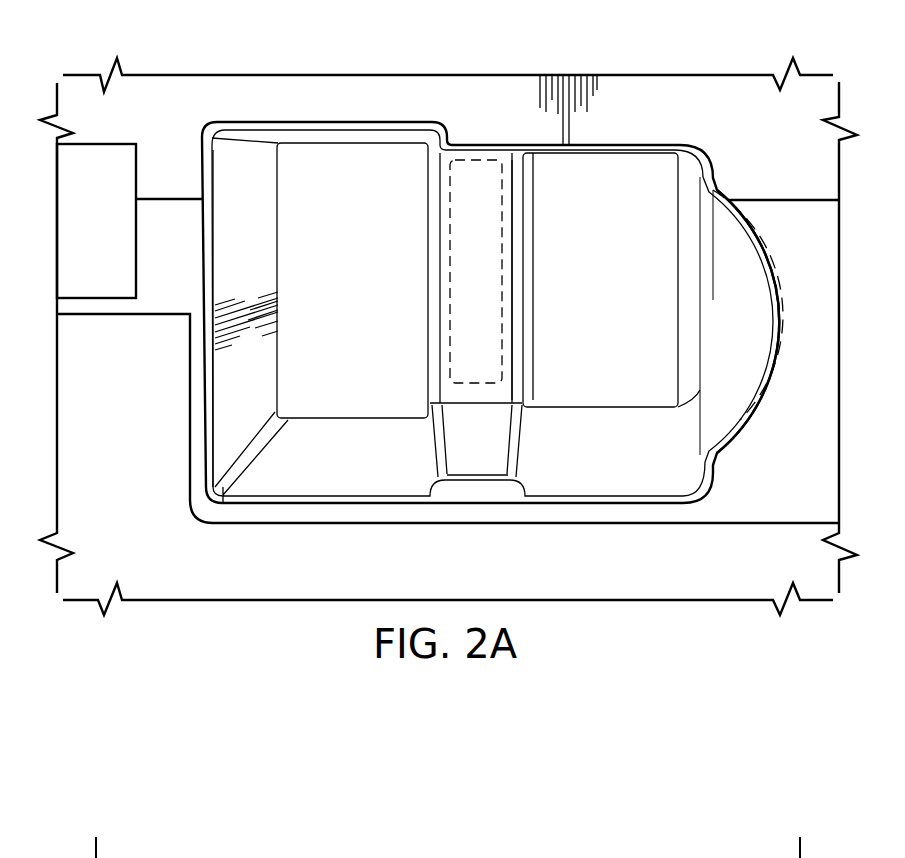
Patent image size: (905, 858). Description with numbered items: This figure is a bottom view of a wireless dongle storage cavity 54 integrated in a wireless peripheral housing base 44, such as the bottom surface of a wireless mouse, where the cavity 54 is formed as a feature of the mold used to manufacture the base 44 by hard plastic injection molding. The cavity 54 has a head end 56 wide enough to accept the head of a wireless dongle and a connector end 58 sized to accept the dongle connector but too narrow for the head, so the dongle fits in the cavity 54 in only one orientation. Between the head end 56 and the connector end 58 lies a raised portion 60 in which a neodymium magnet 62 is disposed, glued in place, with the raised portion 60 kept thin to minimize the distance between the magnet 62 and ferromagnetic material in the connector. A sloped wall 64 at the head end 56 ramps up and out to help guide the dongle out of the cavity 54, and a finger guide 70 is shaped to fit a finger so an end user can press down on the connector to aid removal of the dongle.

The wireless peripheral housing base 44 is at (628, 85).
The wireless dongle storage cavity 54 is at (238, 277).
The head end 56 is at (352, 280).
The connector end 58 is at (600, 280).
The raised portion 60 is at (481, 176).
The neodymium magnet 62 is at (503, 222).
The sloped wall 64 is at (267, 360).
The finger guide 70 is at (740, 263).